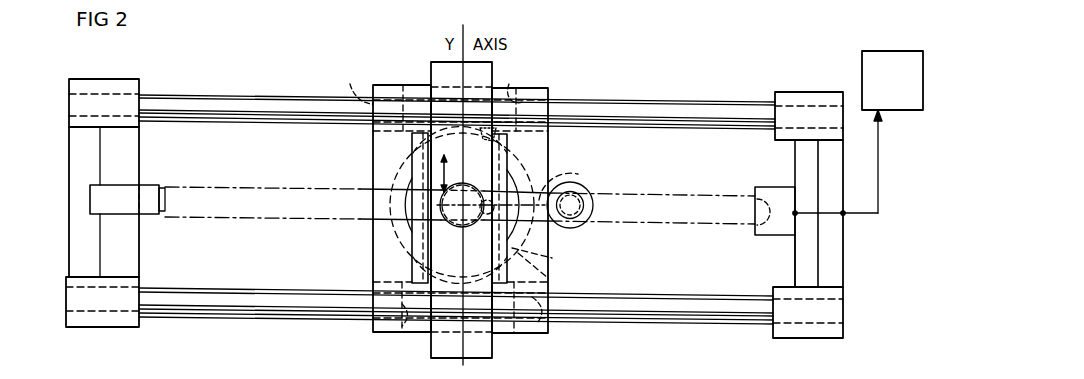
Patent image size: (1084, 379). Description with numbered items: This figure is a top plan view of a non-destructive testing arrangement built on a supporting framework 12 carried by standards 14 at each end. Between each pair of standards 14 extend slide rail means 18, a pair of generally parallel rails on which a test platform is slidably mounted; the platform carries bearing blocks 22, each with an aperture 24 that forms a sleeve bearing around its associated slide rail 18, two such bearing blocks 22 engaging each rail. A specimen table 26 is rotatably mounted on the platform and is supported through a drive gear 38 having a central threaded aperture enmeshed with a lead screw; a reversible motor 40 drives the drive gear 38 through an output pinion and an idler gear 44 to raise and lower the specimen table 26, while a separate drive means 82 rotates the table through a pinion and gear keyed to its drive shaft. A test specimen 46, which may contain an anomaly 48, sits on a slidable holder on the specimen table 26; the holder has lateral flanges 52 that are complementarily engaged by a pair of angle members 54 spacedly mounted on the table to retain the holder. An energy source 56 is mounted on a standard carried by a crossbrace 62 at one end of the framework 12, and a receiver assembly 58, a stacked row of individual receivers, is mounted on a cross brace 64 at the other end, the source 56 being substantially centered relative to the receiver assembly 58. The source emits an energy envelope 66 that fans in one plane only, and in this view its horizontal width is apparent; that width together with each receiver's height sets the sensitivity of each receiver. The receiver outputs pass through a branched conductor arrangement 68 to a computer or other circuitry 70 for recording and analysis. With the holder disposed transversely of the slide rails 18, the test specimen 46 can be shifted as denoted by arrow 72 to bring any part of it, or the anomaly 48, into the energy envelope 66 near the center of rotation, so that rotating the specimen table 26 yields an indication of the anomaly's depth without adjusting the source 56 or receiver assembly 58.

The supporting framework 12 is at (127, 99).
The standards 14 is at (69, 246).
The slide rail means 18 is at (238, 105).
The bearing block 22 is at (513, 88).
The aperture 24 is at (356, 100).
The specimen table 26 is at (550, 280).
The drive gear 38 is at (553, 258).
The reversible motor 40 is at (574, 227).
The idler gear 44 is at (579, 173).
The test specimen 46 is at (487, 79).
The anomaly 48 is at (490, 135).
The lateral flanges 52 is at (503, 173).
The angle members 54 is at (412, 272).
The energy source 56 is at (132, 197).
The receiver assembly 58 is at (765, 187).
The crossbrace 62 is at (125, 143).
The cross brace 64 is at (803, 259).
The energy envelope 66 is at (262, 187).
The branched conductor arrangement 68 is at (868, 213).
The computer or other circuitry 70 is at (878, 58).
The arrow 72 is at (443, 178).
The drive means 82 is at (491, 218).